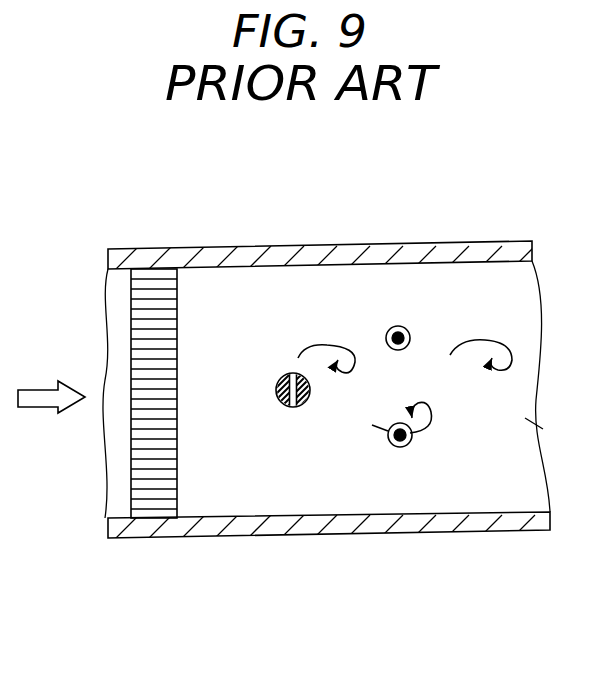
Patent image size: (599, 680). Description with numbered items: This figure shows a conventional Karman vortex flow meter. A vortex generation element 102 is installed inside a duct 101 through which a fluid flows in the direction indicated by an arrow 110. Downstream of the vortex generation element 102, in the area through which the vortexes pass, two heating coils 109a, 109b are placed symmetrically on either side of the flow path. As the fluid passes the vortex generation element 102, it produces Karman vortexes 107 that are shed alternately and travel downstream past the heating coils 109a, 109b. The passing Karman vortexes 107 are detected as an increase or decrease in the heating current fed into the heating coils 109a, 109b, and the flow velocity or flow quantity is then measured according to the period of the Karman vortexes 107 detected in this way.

The duct 101 is at (163, 539).
The vortex generation element 102 is at (288, 408).
The Karman vortexes 107 is at (343, 340).
The heating coil 109a is at (409, 326).
The heating coil 109b is at (412, 446).
The arrow 110 is at (41, 409).